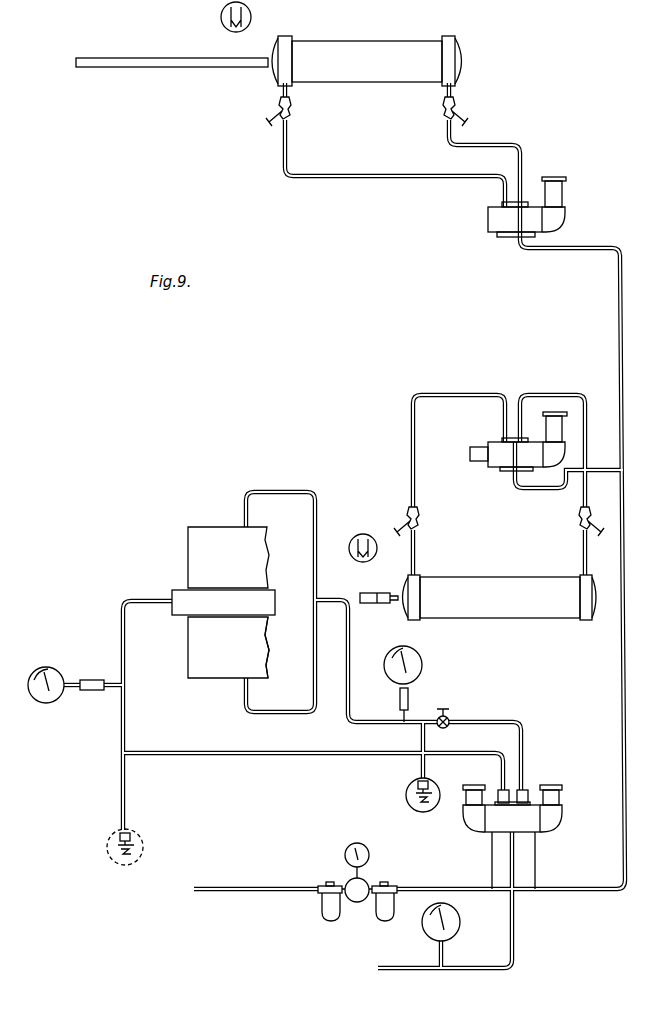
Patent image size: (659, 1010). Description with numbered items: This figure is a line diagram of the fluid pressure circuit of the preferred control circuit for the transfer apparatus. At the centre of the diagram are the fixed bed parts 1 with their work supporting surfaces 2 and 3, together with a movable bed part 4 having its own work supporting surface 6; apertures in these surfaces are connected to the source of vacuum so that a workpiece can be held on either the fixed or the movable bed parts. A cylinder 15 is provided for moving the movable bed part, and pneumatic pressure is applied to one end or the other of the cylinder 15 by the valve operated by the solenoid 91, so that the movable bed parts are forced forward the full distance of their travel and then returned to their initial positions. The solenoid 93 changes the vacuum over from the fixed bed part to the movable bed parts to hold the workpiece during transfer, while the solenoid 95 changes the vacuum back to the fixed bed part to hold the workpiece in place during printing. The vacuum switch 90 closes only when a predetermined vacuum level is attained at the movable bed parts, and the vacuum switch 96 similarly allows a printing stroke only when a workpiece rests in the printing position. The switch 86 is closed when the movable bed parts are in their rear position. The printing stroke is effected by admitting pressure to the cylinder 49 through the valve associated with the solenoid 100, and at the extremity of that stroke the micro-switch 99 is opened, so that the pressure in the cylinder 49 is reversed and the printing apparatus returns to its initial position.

The fixed bed parts 1 is at (225, 605).
The work supporting surface 2 is at (197, 549).
The work supporting surface 3 is at (197, 643).
The movable bed part 4 is at (273, 618).
The work supporting surface 6 is at (271, 595).
The cylinder 15 is at (485, 587).
The cylinder 49 is at (366, 52).
The switch 86 is at (352, 548).
The vacuum switch 90 is at (136, 847).
The solenoid 91 is at (500, 456).
The solenoid 93 is at (478, 820).
The solenoid 95 is at (552, 815).
The vacuum switch 96 is at (413, 795).
The micro-switch 99 is at (225, 19).
The solenoid 100 is at (492, 217).